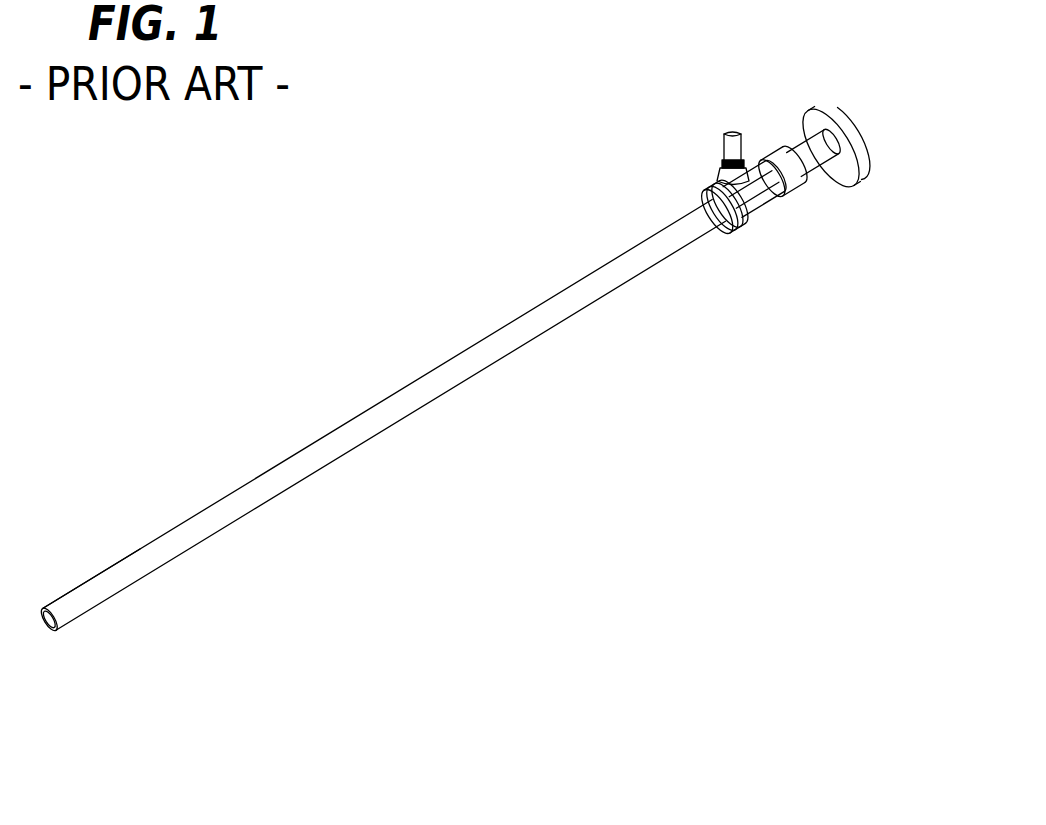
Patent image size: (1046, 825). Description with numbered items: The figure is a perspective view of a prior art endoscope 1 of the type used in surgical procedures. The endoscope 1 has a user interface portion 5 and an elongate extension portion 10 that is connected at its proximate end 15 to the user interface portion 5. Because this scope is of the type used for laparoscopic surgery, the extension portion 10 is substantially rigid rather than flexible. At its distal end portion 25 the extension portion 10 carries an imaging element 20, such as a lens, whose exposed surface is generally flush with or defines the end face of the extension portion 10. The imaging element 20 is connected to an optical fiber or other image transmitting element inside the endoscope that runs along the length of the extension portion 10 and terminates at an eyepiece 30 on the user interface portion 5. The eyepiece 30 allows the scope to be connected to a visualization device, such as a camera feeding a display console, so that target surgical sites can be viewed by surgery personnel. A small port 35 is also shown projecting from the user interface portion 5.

The endoscope 1 is at (366, 291).
The user interface portion 5 is at (783, 178).
The extension portion 10 is at (374, 424).
The proximate end 15 is at (718, 215).
The imaging element 20 is at (47, 629).
The distal end portion 25 is at (57, 606).
The eyepiece 30 is at (837, 118).
The light post / stopcock 35 is at (712, 193).